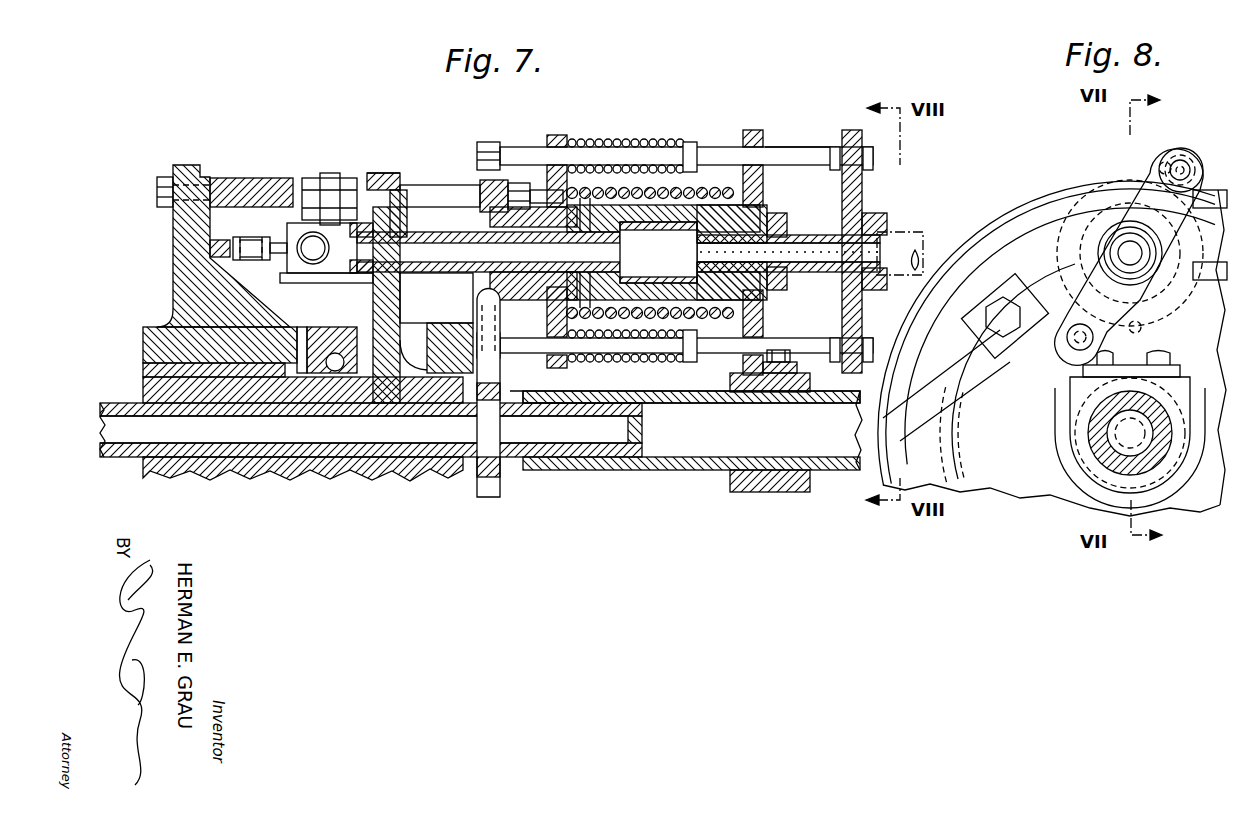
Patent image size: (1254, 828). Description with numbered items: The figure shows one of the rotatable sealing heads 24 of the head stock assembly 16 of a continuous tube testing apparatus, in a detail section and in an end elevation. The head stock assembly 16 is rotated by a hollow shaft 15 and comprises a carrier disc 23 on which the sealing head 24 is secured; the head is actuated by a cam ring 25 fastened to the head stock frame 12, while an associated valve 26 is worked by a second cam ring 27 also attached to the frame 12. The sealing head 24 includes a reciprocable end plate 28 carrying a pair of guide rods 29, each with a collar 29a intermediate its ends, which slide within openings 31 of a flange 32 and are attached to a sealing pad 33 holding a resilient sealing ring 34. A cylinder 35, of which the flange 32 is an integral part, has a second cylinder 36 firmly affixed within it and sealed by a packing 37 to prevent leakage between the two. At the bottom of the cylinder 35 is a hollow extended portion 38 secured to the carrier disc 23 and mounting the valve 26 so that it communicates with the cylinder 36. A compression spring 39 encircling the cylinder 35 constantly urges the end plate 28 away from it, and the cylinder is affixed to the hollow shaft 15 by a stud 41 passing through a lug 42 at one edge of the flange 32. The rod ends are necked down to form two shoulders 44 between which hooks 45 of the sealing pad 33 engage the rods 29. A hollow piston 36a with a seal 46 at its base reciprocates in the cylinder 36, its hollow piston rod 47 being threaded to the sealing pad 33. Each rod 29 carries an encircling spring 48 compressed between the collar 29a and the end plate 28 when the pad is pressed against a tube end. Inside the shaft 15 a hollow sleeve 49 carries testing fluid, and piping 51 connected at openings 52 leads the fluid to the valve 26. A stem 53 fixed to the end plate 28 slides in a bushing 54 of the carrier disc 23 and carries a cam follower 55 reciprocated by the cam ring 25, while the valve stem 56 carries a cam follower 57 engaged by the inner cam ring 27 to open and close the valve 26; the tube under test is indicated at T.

In FIG. 7, the head stock frame 12 is at (180, 282).
In FIG. 7, the hollow shaft 15 is at (660, 472).
In FIG. 8, the hollow shaft 15 is at (1100, 452).
In FIG. 7, the head stock assembly 16 is at (370, 168).
In FIG. 7, the carrier disc 23 is at (392, 173).
In FIG. 7, the sealing head 24 is at (722, 205).
In FIG. 7, the cam ring 25 is at (233, 178).
In FIG. 8, the cam ring 25 is at (1008, 232).
In FIG. 7, the valve 26 is at (296, 231).
In FIG. 8, the valve 26 is at (1006, 297).
In FIG. 7, the second cam ring 27 is at (216, 240).
In FIG. 8, the second cam ring 27 is at (960, 365).
In FIG. 7, the end plate 28 is at (557, 135).
In FIG. 7, the guide rod 29 is at (655, 150).
In FIG. 8, the guide rod 29 is at (1163, 168).
In FIG. 7, the collar 29a is at (692, 142).
In FIG. 7, the opening 31 is at (770, 150).
In FIG. 7, the flange 32 is at (757, 130).
In FIG. 8, the flange 32 is at (1178, 160).
In FIG. 7, the sealing pad 33 is at (854, 130).
In FIG. 8, the sealing pad 33 is at (1188, 148).
In FIG. 7, the resilient sealing ring 34 is at (878, 215).
In FIG. 7, the cylinder 35 is at (700, 205).
In FIG. 8, the cylinder 35 is at (1073, 205).
In FIG. 7, the second cylinder 36 is at (658, 252).
In FIG. 7, the hollow piston 36a is at (787, 220).
In FIG. 7, the packing 37 is at (681, 283).
In FIG. 7, the hollow extended portion 38 is at (438, 233).
In FIG. 7, the compression spring 39 is at (603, 193).
In FIG. 8, the compression spring 39 is at (1070, 225).
In FIG. 7, the stud 41 is at (788, 350).
In FIG. 8, the stud 41 is at (1150, 362).
In FIG. 7, the lug 42 is at (808, 374).
In FIG. 8, the lug 42 is at (1165, 375).
In FIG. 7, the shoulder 44 is at (835, 147).
In FIG. 8, the shoulder 44 is at (1194, 165).
In FIG. 7, the hook 45 is at (830, 155).
In FIG. 8, the hook 45 is at (1175, 160).
In FIG. 7, the seal 46 is at (787, 279).
In FIG. 7, the hollow piston rod 47 is at (806, 243).
In FIG. 7, the spring 48 is at (608, 139).
In FIG. 7, the hollow sleeve 49 is at (432, 378).
In FIG. 7, the piping 51 is at (450, 302).
In FIG. 7, the opening 52 is at (495, 417).
In FIG. 7, the stem 53 is at (434, 190).
In FIG. 8, the stem 53 is at (1130, 190).
In FIG. 7, the bushing 54 is at (403, 185).
In FIG. 7, the cam follower 55 is at (338, 185).
In FIG. 7, the stem 56 is at (281, 260).
In FIG. 7, the cam follower 57 is at (253, 240).
In FIG. 7, the tube outlet T is at (905, 235).